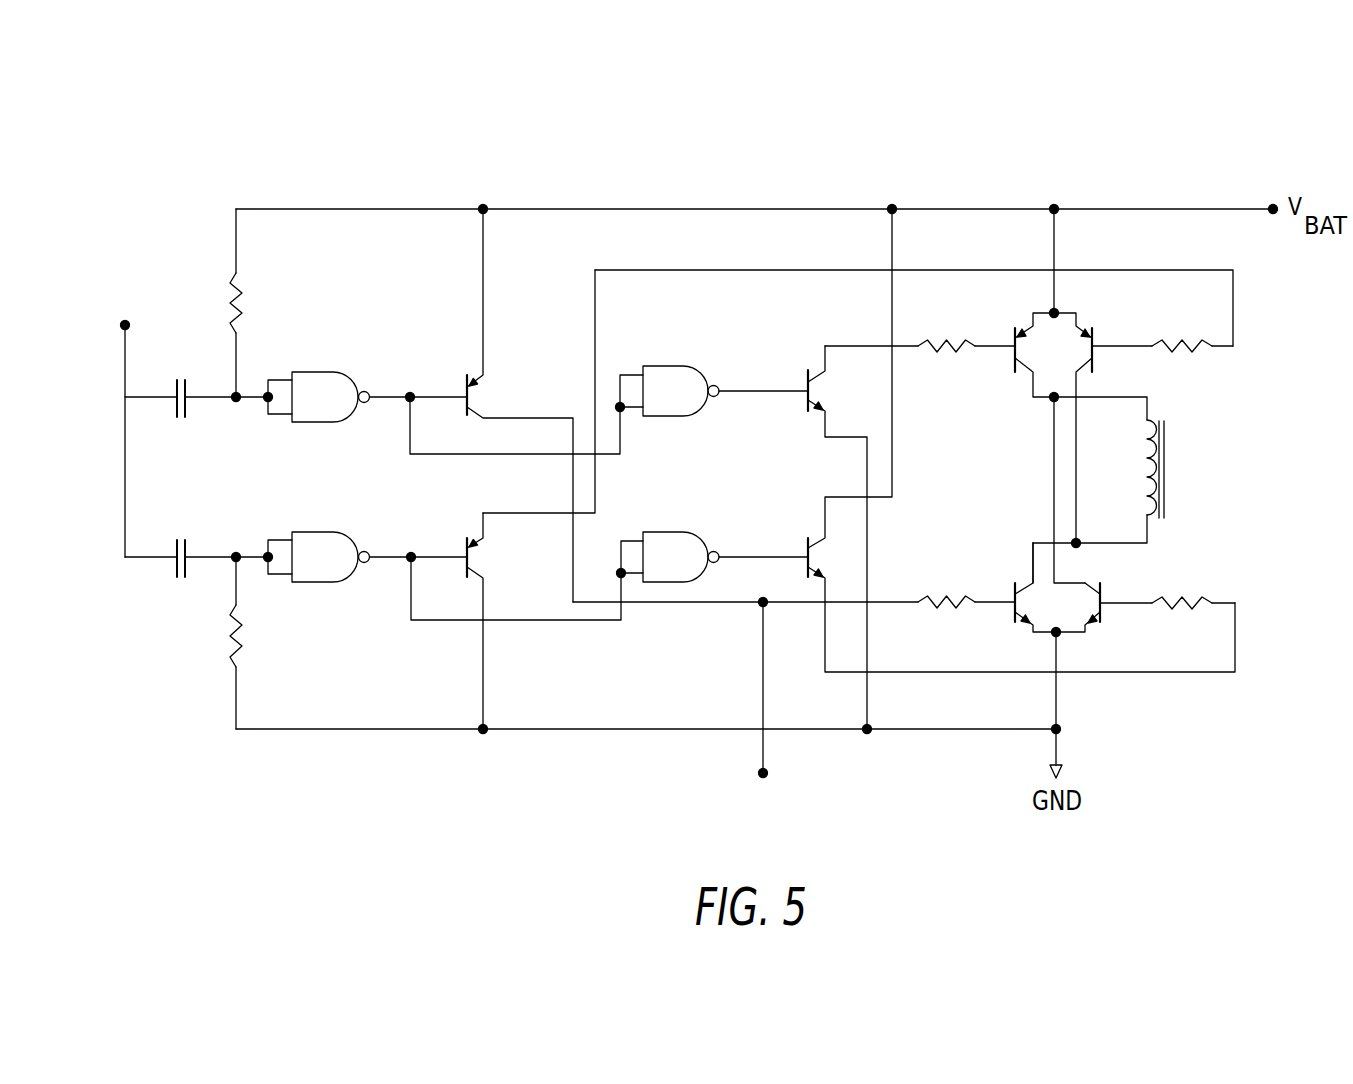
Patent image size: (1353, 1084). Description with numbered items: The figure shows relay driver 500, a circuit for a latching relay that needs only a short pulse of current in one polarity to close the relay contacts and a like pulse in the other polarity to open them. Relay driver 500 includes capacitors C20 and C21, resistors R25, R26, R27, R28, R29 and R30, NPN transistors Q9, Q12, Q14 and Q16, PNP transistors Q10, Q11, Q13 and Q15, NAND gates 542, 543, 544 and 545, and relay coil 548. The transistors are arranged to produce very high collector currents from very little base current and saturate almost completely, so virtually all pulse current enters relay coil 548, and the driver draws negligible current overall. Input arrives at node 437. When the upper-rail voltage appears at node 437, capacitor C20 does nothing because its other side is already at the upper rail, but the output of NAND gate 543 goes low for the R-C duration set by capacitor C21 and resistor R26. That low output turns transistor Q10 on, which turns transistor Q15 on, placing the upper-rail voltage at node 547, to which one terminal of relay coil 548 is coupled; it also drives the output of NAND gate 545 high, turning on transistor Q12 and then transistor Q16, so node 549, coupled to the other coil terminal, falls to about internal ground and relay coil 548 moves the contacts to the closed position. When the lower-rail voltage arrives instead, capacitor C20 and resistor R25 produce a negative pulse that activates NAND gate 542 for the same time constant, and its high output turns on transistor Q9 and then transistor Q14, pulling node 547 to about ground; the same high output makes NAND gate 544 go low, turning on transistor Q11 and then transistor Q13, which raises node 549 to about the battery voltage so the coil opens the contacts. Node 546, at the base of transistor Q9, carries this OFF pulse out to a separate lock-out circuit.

The relay driver 500 is at (1198, 132).
The node 437 is at (120, 320).
The capacitor C20 is at (181, 424).
The capacitor C21 is at (183, 582).
The resistor R25 is at (232, 308).
The resistor R26 is at (242, 628).
The NAND gate 542 is at (330, 378).
The NAND gate 543 is at (330, 538).
The NAND gate 544 is at (670, 380).
The NAND gate 545 is at (672, 545).
The NPN transistor Q9 is at (481, 392).
The PNP transistor Q10 is at (482, 560).
The PNP transistor Q11 is at (815, 377).
The NPN transistor Q12 is at (806, 552).
The resistor R27 is at (953, 338).
The resistor R28 is at (942, 598).
The resistor R29 is at (1187, 350).
The resistor R30 is at (1192, 600).
The PNP transistor Q13 is at (1015, 360).
The NPN transistor Q14 is at (1013, 588).
The PNP transistor Q15 is at (1092, 338).
The NPN transistor Q16 is at (1103, 613).
The node 547 is at (1074, 540).
The relay coil 548 is at (1166, 462).
The node 549 is at (1052, 402).
The node 546 is at (763, 773).